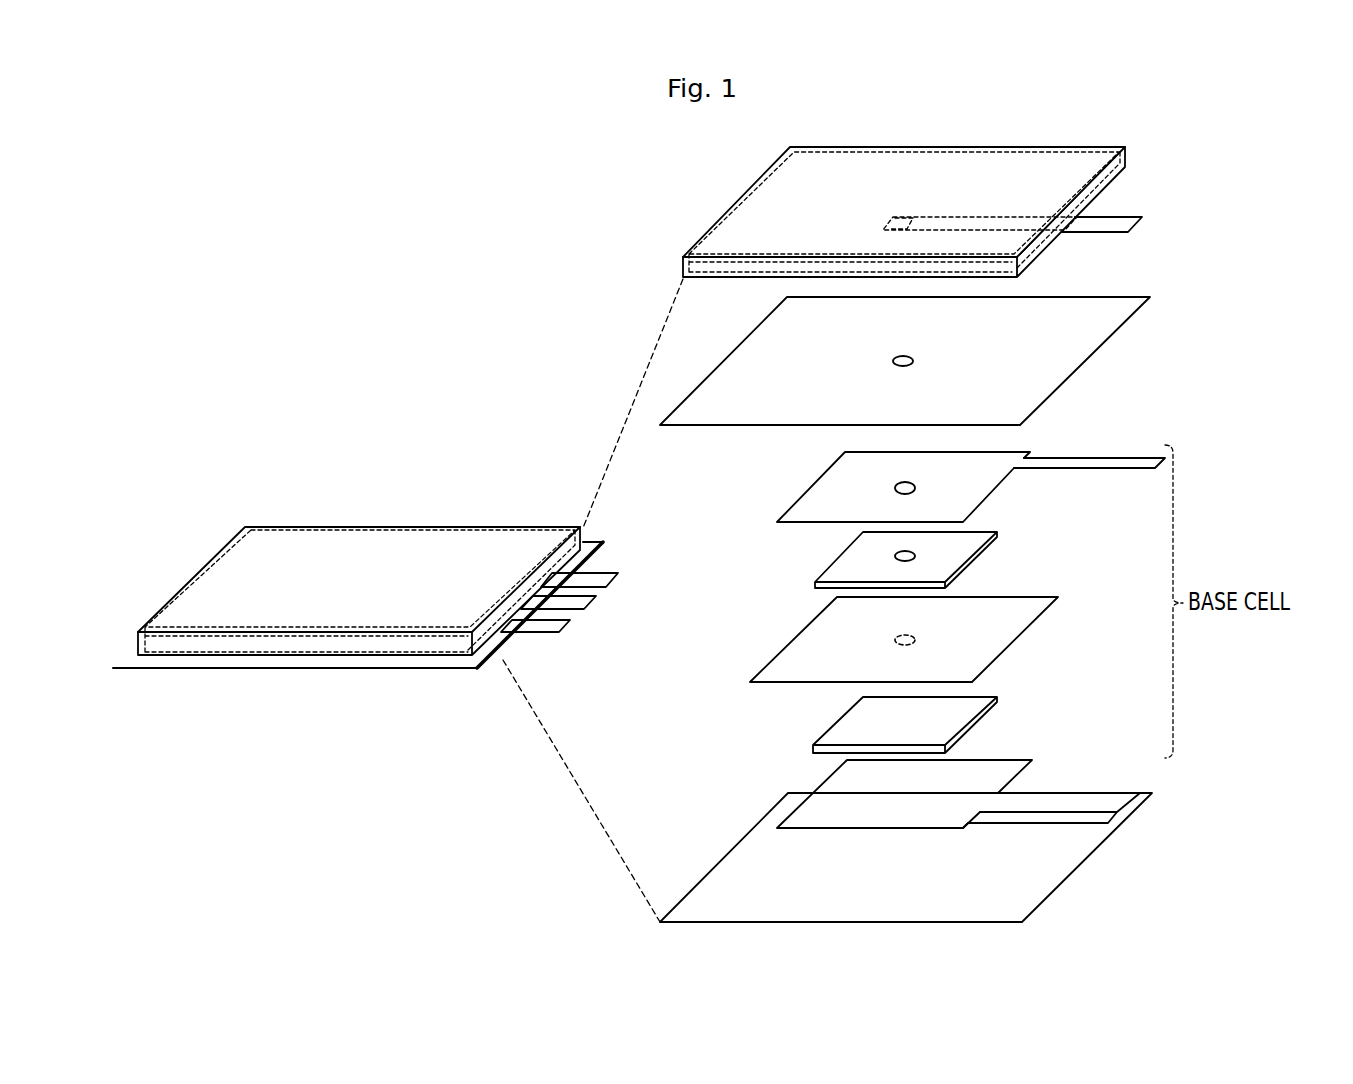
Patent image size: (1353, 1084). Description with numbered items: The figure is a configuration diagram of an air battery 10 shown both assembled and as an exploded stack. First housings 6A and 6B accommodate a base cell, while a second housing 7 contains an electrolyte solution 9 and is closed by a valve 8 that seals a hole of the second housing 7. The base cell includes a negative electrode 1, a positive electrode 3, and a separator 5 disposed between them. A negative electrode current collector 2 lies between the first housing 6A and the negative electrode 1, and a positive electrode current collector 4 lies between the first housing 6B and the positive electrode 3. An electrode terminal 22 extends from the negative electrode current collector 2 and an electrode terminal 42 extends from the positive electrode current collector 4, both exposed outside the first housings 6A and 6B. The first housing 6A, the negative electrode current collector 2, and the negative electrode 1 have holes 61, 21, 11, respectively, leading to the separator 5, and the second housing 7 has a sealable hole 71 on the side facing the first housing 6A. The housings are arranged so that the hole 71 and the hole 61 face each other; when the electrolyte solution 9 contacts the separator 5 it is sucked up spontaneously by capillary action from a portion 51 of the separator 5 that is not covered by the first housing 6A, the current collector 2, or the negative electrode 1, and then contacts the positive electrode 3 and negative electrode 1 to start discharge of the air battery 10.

The air battery 10 is at (397, 508).
The second housing 7 is at (1128, 160).
The hole 71 is at (912, 220).
The valve 8 is at (1138, 230).
The electrolyte solution 9 is at (1044, 245).
The first housing 6A is at (1084, 365).
The hole 61 is at (911, 357).
The negative electrode current collector 2 is at (993, 497).
The electrode terminal 22 is at (1103, 458).
The hole 21 is at (895, 487).
The negative electrode 1 is at (977, 562).
The hole 11 is at (895, 555).
The separator 5 is at (1013, 645).
The portion of the separator corresponding to the holes 51 is at (895, 639).
The positive electrode 3 is at (973, 730).
The positive electrode current collector 4 is at (1022, 780).
The electrode terminal 42 is at (1105, 810).
The first housing 6B is at (1081, 867).